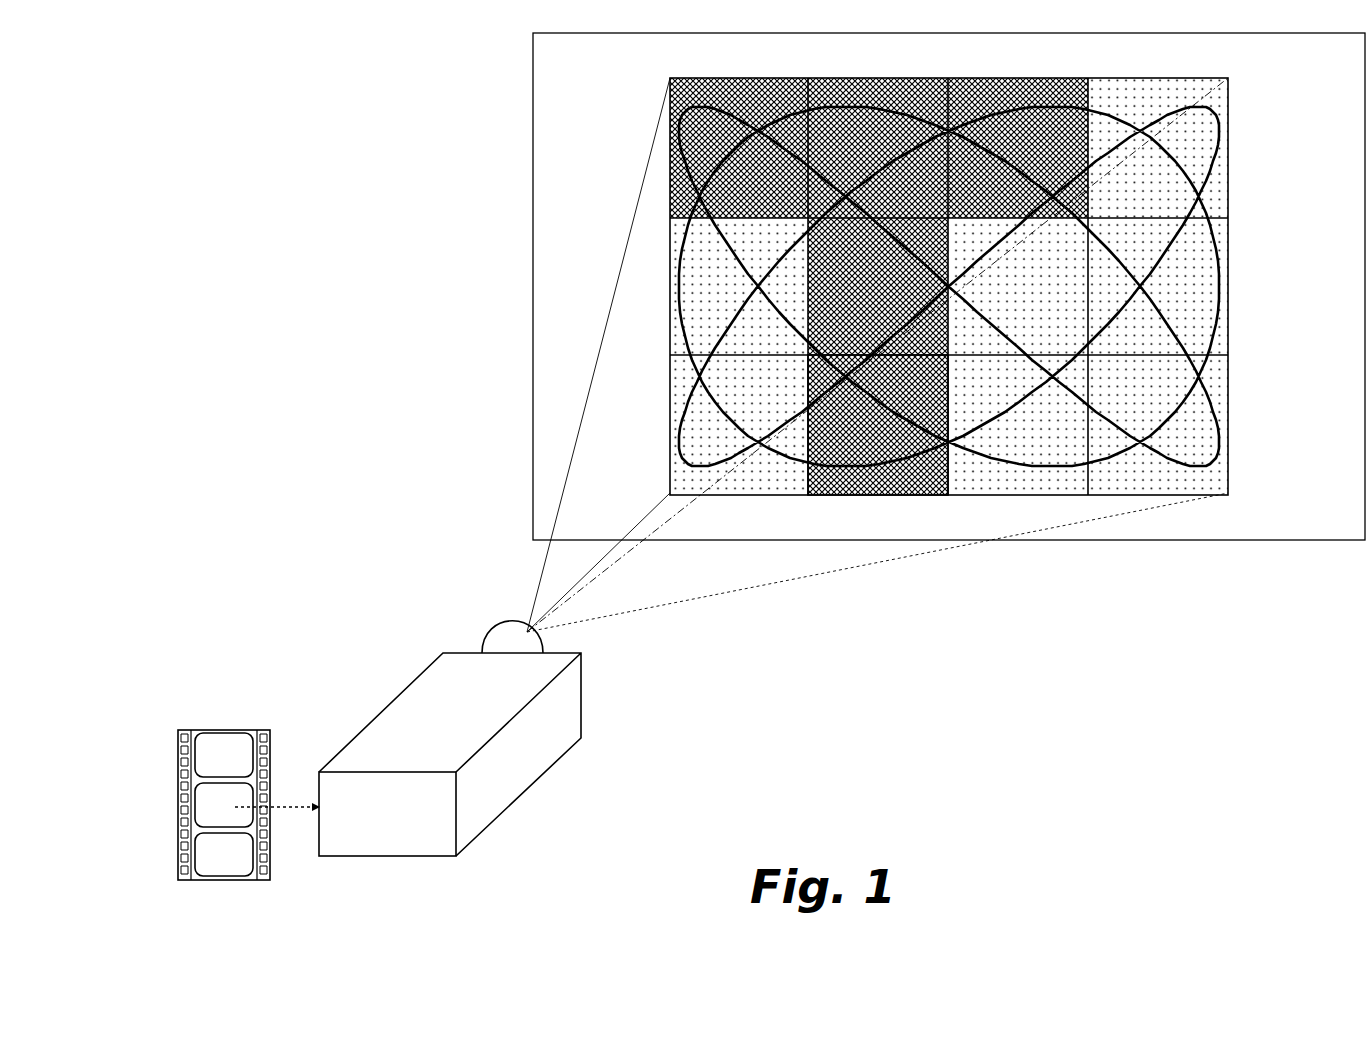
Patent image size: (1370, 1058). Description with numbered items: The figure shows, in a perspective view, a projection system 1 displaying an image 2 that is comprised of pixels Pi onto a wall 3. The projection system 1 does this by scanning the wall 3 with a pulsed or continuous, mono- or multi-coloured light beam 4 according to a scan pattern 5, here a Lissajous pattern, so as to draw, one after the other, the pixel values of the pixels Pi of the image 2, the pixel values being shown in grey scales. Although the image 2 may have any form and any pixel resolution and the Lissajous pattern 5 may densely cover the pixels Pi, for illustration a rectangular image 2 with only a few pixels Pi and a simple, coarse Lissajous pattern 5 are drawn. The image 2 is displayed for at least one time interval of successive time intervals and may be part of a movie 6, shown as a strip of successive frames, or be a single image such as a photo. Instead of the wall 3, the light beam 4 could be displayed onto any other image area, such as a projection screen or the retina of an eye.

The projection system 1 is at (362, 658).
The image 2 is at (1235, 388).
The wall 3 is at (528, 414).
The light beam 4 is at (655, 516).
The scan pattern 5 is at (1224, 247).
The movie 6 is at (179, 751).
The pixel Pi is at (873, 465).